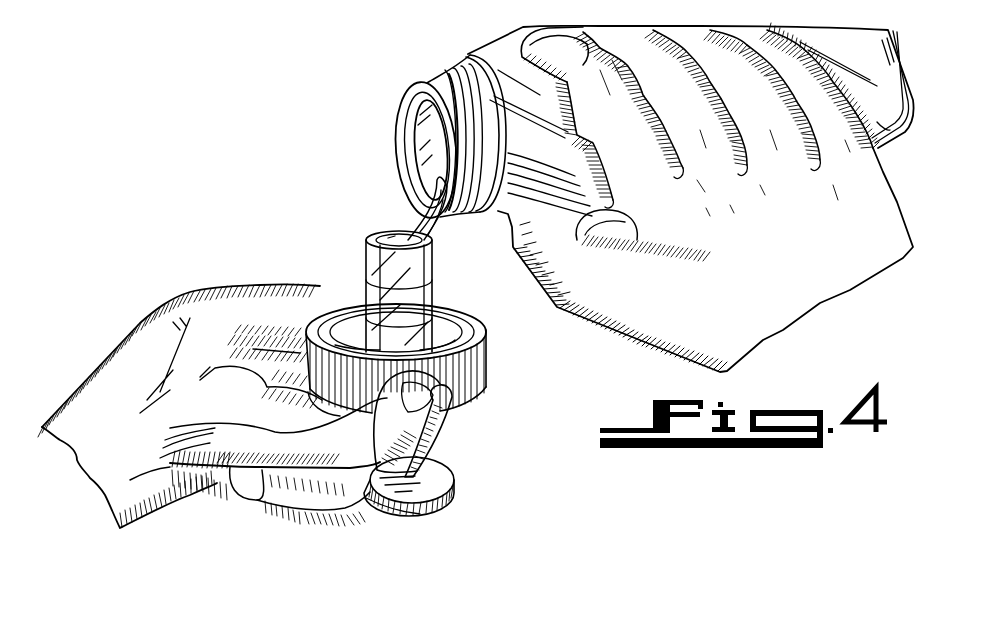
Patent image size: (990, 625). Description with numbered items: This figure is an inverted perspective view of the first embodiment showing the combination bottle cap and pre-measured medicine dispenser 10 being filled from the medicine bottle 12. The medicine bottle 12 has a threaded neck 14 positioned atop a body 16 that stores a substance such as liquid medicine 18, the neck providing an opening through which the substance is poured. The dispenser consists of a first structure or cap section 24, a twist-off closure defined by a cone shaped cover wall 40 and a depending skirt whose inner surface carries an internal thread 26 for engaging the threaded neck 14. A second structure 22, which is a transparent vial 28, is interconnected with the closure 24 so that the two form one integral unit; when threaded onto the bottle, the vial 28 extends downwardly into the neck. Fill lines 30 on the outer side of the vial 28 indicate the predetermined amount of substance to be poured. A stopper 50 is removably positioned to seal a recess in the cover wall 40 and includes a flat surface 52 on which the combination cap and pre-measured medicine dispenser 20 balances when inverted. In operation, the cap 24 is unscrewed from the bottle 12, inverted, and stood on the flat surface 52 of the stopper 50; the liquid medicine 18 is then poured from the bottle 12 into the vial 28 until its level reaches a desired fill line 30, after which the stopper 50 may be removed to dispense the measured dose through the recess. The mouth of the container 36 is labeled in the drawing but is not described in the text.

The combination bottle cap and pre-measured medicine dispenser 10 is at (409, 371).
The medicine bottle 12 is at (926, 100).
The threaded neck 14 is at (436, 79).
The body 16 is at (880, 122).
The liquid medicine 18 is at (403, 207).
The combination cap and pre-measured medicine dispenser 20 is at (435, 337).
The second structure 22 is at (383, 274).
The first structure or cap section 24 is at (466, 378).
The internal thread 26 is at (456, 316).
The transparent vial 28 is at (374, 266).
The fill lines 30 is at (366, 278).
The container mouth 36 is at (398, 130).
The cone shaped cover wall 40 is at (394, 503).
The stopper 50 is at (372, 510).
The flat surface 52 is at (392, 520).